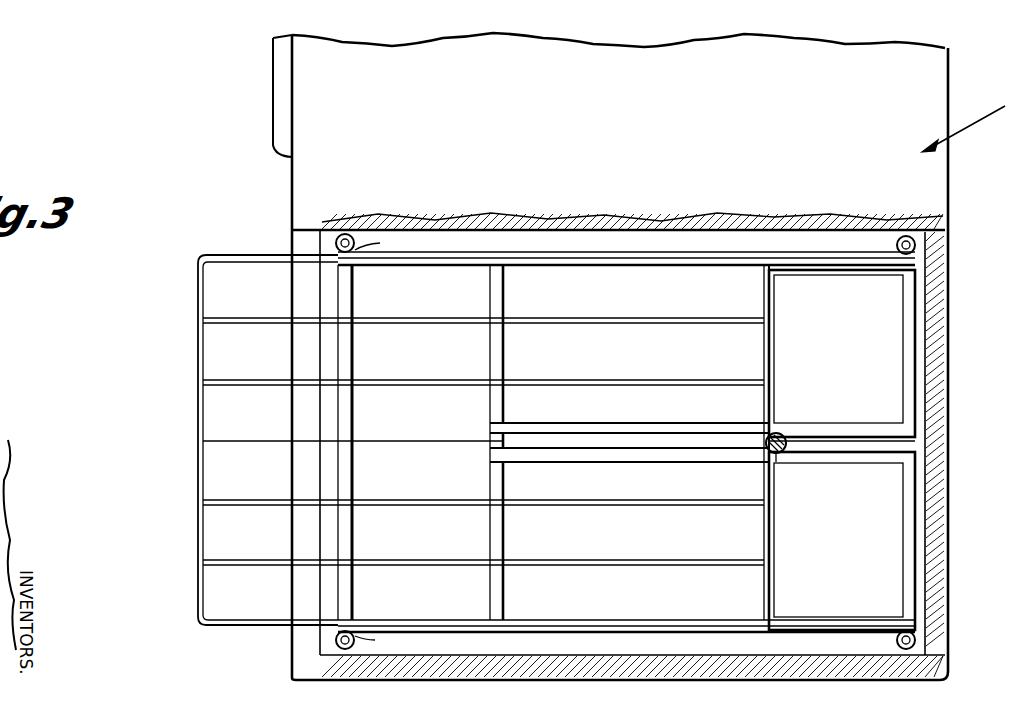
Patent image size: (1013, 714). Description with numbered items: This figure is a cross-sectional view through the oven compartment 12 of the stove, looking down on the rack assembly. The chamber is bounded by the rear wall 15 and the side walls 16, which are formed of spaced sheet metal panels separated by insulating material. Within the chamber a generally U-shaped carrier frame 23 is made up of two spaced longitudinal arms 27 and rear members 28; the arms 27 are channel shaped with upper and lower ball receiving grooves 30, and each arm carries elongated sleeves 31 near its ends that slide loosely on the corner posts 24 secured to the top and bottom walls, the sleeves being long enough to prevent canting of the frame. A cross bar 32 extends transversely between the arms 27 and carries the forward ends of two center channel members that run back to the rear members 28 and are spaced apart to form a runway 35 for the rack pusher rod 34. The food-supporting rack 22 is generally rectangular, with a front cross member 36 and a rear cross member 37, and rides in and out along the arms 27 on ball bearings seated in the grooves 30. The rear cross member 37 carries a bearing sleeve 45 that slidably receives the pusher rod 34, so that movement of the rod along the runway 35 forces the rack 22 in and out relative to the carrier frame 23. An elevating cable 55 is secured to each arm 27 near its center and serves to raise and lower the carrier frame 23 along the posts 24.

The oven compartment 12 is at (330, 292).
The rear wall 15 is at (948, 417).
The side walls 16 is at (530, 228).
The rack 22 is at (200, 418).
The carrier frame 23 is at (565, 623).
The corner posts 24 is at (906, 234).
The longitudinal arms 27 is at (772, 260).
The rear members 28 is at (908, 340).
The ball receiving grooves 30 is at (652, 268).
The sleeves 31 is at (356, 243).
The cross bar 32 is at (500, 540).
The rack pusher rod 34 is at (776, 454).
The runway 35 is at (841, 440).
The front cross member 36 is at (200, 539).
The rear cross member 37 is at (770, 540).
The bearing sleeve 45 is at (781, 432).
The elevating cable 55 is at (630, 250).